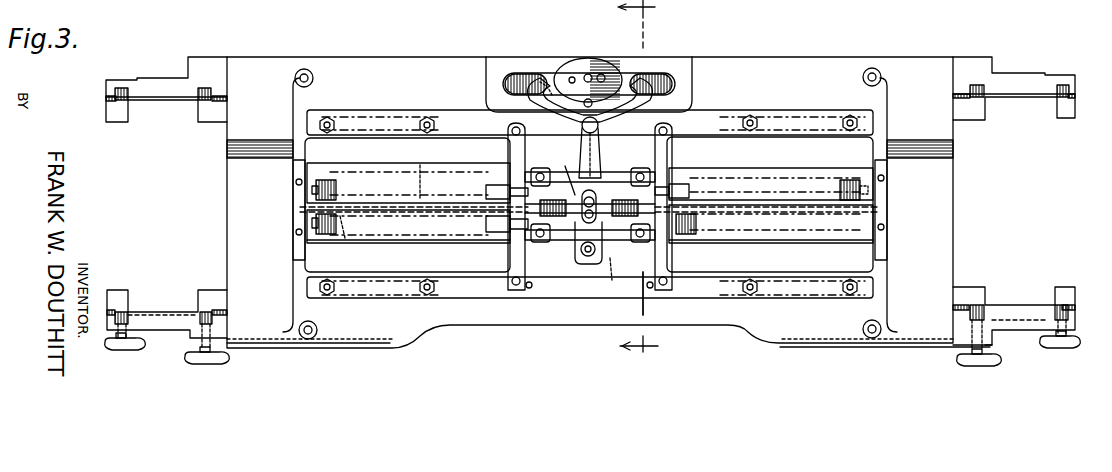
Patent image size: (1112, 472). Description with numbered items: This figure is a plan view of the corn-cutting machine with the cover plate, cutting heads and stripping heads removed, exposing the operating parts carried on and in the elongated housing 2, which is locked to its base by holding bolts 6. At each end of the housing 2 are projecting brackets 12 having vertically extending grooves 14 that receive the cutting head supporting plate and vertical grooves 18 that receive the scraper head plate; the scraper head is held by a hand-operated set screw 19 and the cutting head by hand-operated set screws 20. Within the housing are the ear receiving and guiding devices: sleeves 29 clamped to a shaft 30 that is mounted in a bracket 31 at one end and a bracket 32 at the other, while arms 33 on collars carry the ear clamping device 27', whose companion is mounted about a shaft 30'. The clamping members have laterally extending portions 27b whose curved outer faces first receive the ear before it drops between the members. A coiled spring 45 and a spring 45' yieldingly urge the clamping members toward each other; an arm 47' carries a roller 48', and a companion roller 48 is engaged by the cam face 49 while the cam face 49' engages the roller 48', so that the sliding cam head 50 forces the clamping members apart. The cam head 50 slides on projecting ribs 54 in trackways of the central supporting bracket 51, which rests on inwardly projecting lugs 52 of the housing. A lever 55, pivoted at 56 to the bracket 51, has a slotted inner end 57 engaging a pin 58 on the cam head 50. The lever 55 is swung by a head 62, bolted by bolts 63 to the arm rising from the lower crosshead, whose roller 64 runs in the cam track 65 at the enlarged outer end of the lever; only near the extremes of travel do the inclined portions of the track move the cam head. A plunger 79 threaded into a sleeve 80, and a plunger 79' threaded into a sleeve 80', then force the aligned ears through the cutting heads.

The housing 2 is at (914, 62).
The holding bolts 6 is at (638, 187).
The projecting brackets 12 is at (206, 64).
The vertically extending grooves 14 is at (205, 101).
The vertical grooves 18 is at (120, 101).
The hand-operated set screw 19 is at (121, 350).
The hand-operated set screws 20 is at (186, 360).
The ear clamping device 27' is at (589, 204).
The laterally extending portions 27b is at (382, 182).
The sleeves 29 is at (342, 230).
The shaft 30 is at (590, 237).
The shaft 30' is at (425, 174).
The bracket 31 is at (297, 218).
The bracket 32 is at (684, 220).
The arms 33 is at (324, 236).
The coiled spring 45 is at (528, 264).
The spring 45' is at (528, 204).
The arm 47' is at (500, 184).
The roller 48 is at (566, 248).
The roller 48' is at (589, 162).
The cam face 49 is at (609, 204).
The cam face 49' is at (683, 130).
The sliding cam head 50 is at (567, 80).
The supporting bracket 51 is at (612, 266).
The inwardly projecting lugs 52 is at (632, 282).
The projecting ribs 54 is at (612, 170).
The lever 55 is at (600, 130).
The pivot 56 is at (672, 96).
The slotted inner end 57 is at (592, 262).
The pin 58 is at (568, 174).
The head 62 is at (605, 70).
The bolts 63 is at (575, 77).
The roller 64 is at (538, 100).
The cam track 65 is at (545, 83).
The plunger 79 is at (323, 174).
The plunger 79' is at (839, 184).
The sleeve 80 is at (499, 228).
The sleeve 80' is at (690, 183).